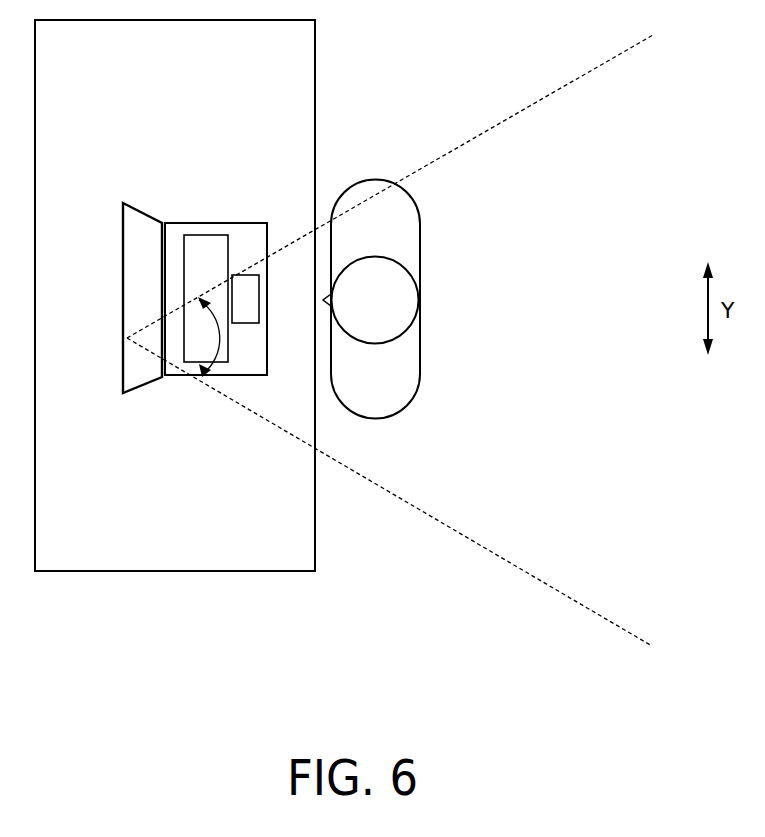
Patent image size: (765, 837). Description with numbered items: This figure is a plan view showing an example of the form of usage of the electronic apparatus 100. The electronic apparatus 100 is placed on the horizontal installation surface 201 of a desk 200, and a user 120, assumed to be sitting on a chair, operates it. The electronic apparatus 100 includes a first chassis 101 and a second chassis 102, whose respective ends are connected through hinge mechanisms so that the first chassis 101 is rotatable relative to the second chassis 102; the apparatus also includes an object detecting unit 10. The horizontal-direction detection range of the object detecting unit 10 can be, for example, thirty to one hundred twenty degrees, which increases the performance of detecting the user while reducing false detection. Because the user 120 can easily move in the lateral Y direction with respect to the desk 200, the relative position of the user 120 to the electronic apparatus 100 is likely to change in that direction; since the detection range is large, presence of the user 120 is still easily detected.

The object detecting unit 10 is at (125, 338).
The electronic apparatus 100 is at (199, 251).
The first chassis 101 is at (138, 204).
The second chassis 102 is at (247, 223).
The user 120 is at (421, 371).
The desk 200 is at (138, 573).
The installation surface 201 is at (230, 545).